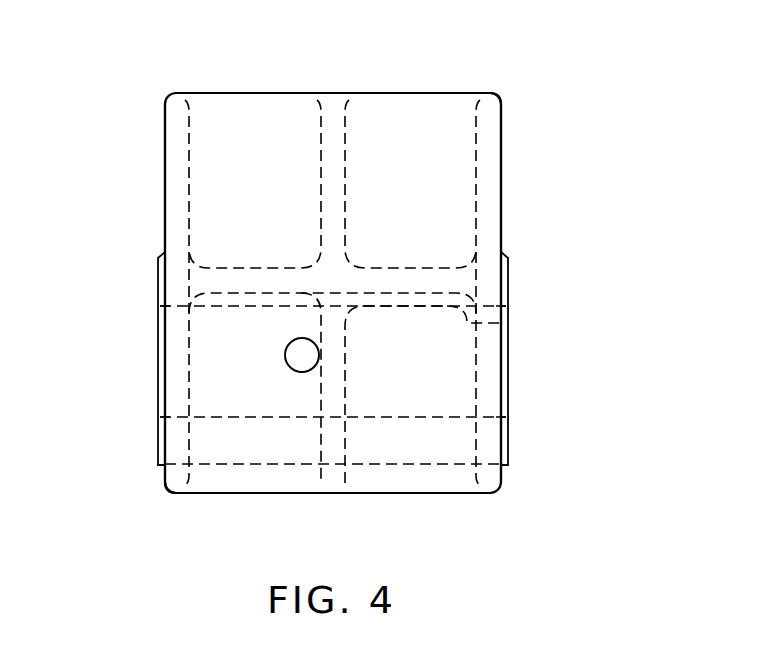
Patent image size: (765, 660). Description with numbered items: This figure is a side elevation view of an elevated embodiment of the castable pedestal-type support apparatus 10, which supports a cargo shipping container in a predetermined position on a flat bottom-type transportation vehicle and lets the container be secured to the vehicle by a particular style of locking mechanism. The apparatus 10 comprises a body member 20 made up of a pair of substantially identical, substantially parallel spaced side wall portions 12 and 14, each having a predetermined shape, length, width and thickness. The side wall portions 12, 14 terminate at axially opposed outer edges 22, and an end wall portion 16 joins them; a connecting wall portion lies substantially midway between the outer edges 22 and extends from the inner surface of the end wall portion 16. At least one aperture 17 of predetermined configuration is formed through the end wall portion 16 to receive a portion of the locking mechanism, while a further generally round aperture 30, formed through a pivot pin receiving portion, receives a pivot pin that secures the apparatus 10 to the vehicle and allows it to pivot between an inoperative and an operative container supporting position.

The pedestal-type support apparatus 10 is at (532, 142).
The side wall portion 12 is at (166, 140).
The side wall portion 14 is at (496, 195).
The end wall portion 16 is at (265, 197).
The aperture 17 is at (296, 355).
The body member 20 is at (166, 186).
The axially opposed outer edge 22 is at (490, 93).
The aperture 30 is at (505, 323).